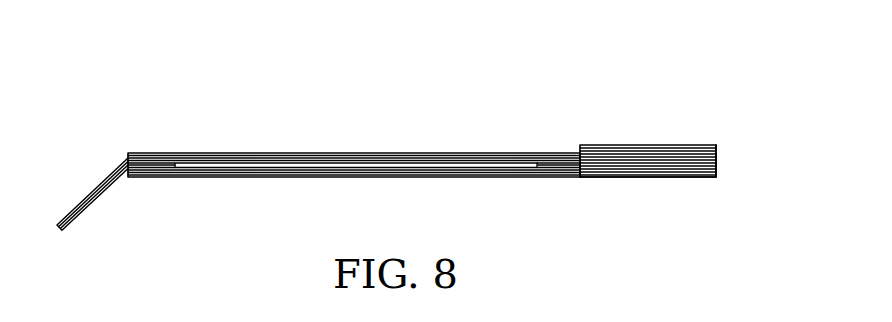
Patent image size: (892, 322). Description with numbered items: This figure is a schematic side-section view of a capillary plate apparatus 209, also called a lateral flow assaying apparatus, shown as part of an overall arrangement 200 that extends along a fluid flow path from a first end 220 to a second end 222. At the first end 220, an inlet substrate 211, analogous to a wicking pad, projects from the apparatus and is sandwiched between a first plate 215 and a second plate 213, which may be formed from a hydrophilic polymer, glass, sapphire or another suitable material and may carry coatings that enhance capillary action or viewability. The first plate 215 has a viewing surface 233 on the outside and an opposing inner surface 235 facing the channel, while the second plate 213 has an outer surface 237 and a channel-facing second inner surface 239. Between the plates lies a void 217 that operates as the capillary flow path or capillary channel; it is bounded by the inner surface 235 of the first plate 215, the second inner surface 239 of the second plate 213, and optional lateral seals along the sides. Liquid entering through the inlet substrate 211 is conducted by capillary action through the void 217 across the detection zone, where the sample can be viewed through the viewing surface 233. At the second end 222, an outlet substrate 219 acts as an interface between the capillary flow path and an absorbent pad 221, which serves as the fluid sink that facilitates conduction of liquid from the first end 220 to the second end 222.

The tissue fastening device 200 is at (567, 77).
The capillary plate apparatus 209 is at (350, 145).
The inlet substrate 211 is at (90, 192).
The second plate 213 is at (425, 177).
The first plate 215 is at (395, 153).
The void 217 is at (277, 167).
The outlet substrate 219 is at (653, 145).
The first end 220 is at (133, 112).
The absorbent pad 221 is at (625, 177).
The second end 222 is at (682, 197).
The viewing surface 233 is at (188, 153).
The inner surface 235 is at (223, 168).
The outer surface 237 is at (305, 177).
The second inner surface 239 is at (478, 167).